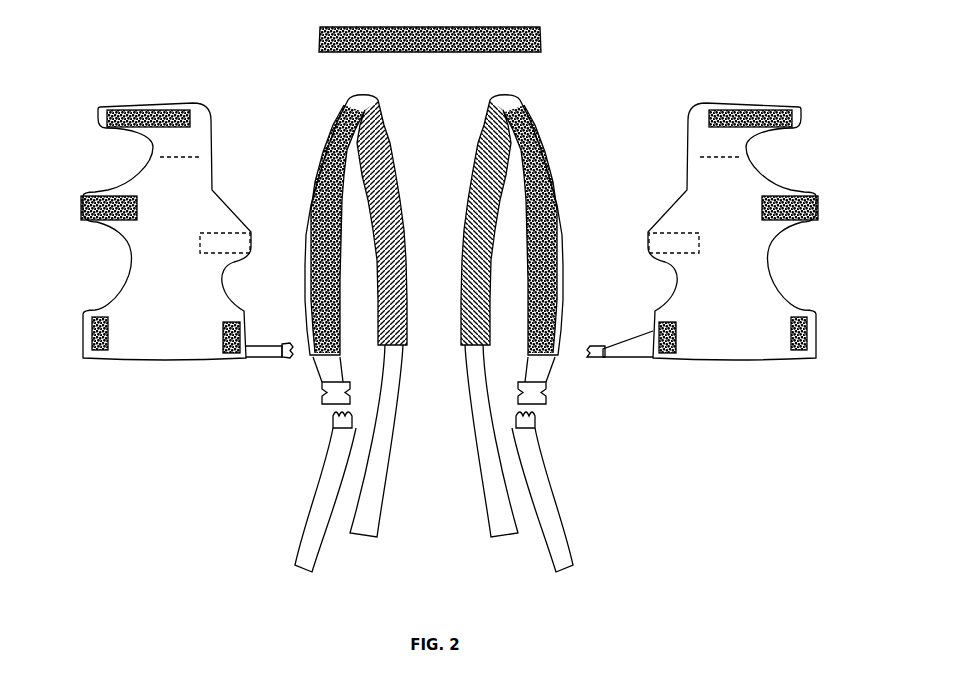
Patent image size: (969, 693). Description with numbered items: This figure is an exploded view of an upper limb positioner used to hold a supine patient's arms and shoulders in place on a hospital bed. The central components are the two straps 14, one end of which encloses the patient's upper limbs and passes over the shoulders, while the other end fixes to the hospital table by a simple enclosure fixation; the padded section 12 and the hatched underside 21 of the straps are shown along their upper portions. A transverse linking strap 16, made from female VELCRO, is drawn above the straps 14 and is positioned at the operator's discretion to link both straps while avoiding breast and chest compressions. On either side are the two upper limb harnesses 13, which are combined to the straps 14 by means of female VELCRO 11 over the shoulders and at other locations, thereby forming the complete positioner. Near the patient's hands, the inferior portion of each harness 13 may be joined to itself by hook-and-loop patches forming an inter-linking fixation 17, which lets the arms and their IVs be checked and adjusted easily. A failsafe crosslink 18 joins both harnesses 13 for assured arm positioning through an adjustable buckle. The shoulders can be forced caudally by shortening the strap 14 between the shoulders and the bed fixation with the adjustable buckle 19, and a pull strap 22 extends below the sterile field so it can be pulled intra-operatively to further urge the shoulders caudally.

The female VELCRO 11 is at (227, 242).
The shoulder strap pad 12 is at (333, 147).
The upper limb harness 13 is at (153, 277).
The strap 14 is at (378, 463).
The transverse linking strap 16 is at (428, 37).
The inter-linking fixation 17 is at (223, 347).
The failsafe crosslink 18 is at (260, 357).
The adjustable buckle 19 is at (340, 410).
The strap underside 21 is at (380, 177).
The pull strap 22 is at (550, 555).